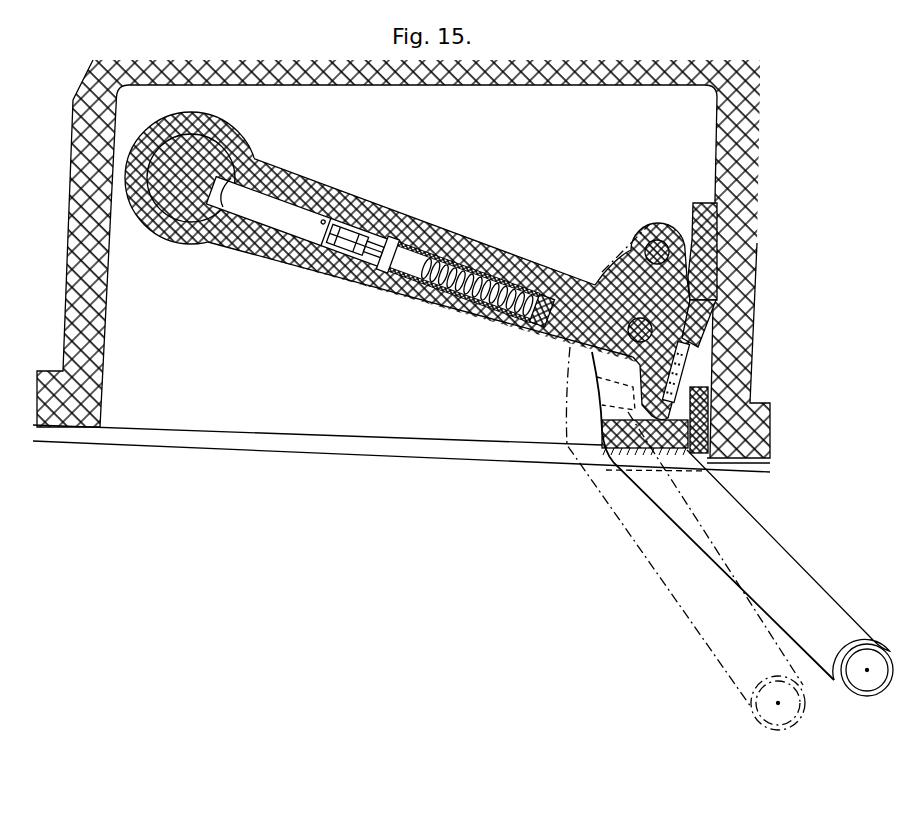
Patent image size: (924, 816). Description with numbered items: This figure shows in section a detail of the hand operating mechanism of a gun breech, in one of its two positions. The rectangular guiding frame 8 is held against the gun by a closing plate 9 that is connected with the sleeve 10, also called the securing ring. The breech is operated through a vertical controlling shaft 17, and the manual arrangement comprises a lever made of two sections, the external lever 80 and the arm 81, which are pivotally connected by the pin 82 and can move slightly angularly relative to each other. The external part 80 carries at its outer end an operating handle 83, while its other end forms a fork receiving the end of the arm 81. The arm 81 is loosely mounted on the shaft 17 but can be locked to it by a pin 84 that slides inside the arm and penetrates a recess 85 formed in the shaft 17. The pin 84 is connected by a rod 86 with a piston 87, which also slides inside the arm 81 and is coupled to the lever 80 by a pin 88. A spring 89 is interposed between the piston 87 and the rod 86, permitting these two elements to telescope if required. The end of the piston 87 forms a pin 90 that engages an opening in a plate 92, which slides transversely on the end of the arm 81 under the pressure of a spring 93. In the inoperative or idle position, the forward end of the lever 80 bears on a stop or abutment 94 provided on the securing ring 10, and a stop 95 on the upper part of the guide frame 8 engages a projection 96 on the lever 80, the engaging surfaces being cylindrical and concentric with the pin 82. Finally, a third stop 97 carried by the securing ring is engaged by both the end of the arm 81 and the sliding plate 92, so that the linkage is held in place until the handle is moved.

The guiding frame 8 is at (408, 271).
The closing plate 9 is at (489, 452).
The sleeve 10 is at (74, 321).
The controlling shaft 17 is at (193, 172).
The lever 80 is at (725, 523).
The arm 81 is at (317, 193).
The pin 82 is at (657, 247).
The operating handle 83 is at (869, 668).
The pin 84 is at (349, 322).
The recess 85 is at (226, 193).
The rod 86 is at (488, 298).
The piston 87 is at (652, 423).
The pin 88 is at (604, 353).
The spring 89 is at (569, 328).
The pin 90 is at (712, 351).
The plate 92 is at (698, 313).
The spring 93 is at (690, 375).
The stop 94 is at (700, 428).
The stop 95 is at (598, 437).
The projection 96 is at (606, 388).
The third stop 97 is at (712, 220).